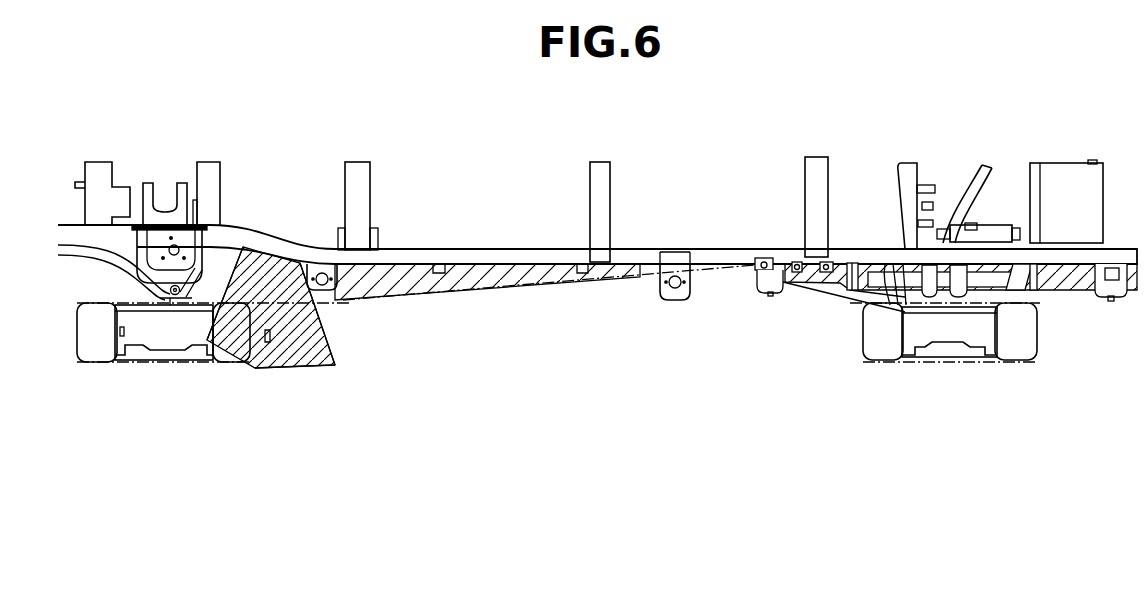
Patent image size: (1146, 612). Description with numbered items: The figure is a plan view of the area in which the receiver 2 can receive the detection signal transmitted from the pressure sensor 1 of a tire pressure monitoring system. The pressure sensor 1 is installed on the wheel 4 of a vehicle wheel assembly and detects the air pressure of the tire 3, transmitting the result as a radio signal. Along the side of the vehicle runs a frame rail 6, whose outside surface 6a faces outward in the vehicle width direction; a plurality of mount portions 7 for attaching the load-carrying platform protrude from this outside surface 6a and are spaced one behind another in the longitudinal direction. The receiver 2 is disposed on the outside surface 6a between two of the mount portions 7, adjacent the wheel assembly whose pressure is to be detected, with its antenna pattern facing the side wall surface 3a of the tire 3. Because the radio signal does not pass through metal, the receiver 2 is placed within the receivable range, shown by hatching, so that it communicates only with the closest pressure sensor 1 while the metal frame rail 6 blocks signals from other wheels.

The pressure sensor 1 is at (117, 360).
The receiver 2 is at (262, 342).
The tire 3 is at (92, 345).
The side wall surface 3a is at (895, 264).
The wheel 4 is at (168, 348).
The frame rail 6 is at (513, 248).
The outside surface 6a is at (717, 270).
The mount portion 7 is at (766, 258).